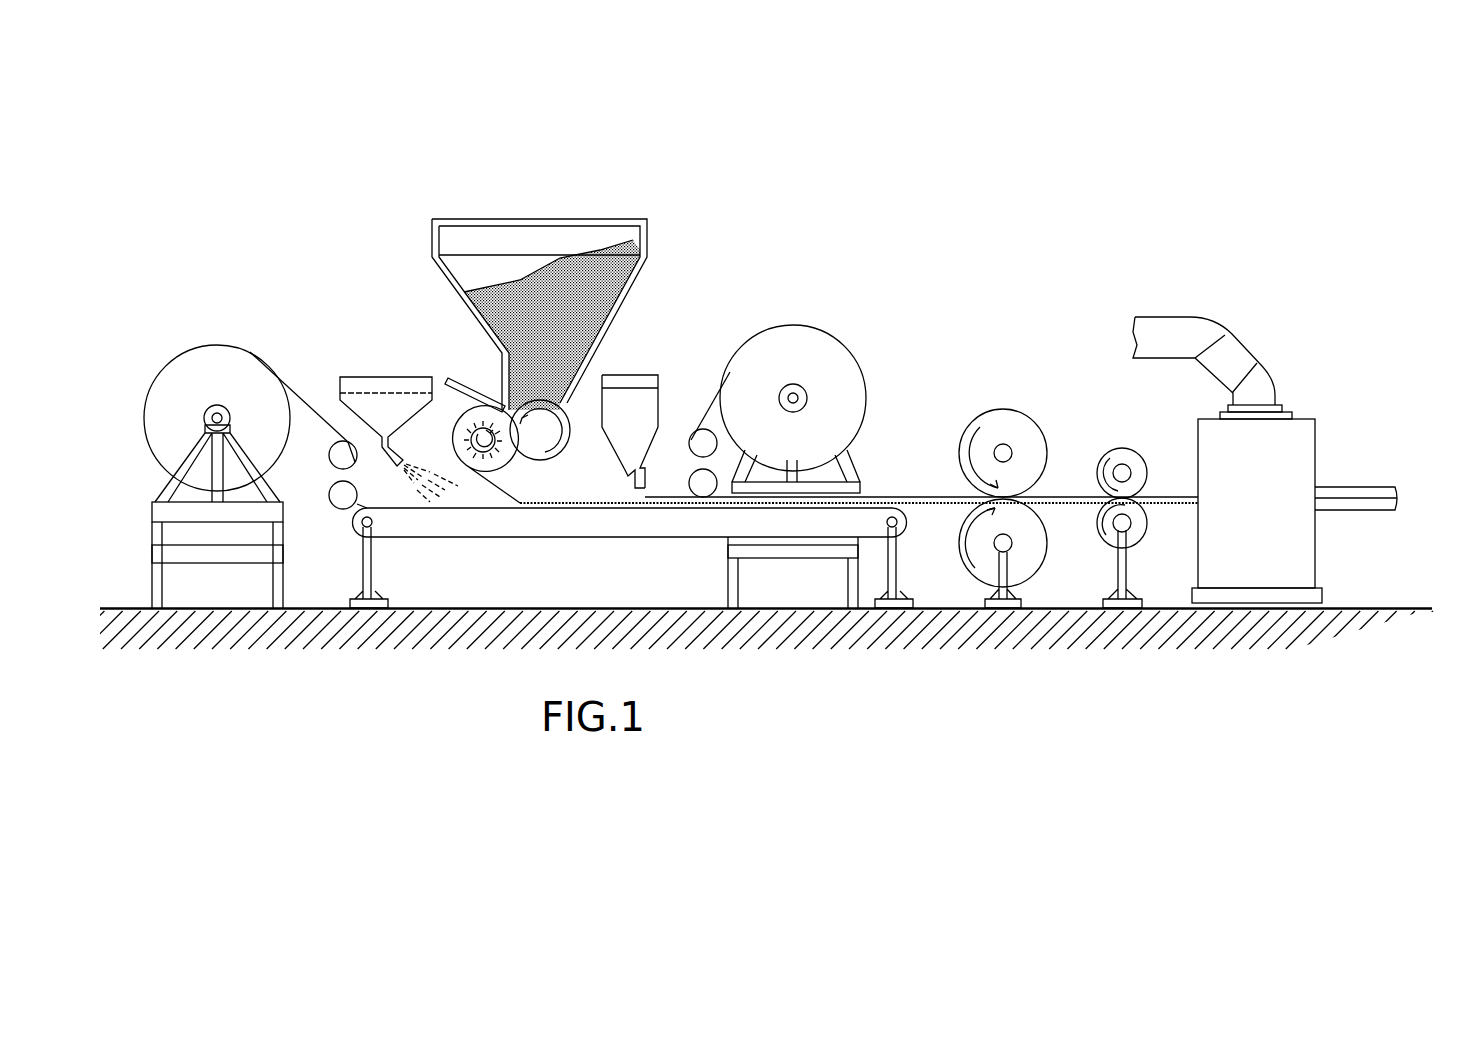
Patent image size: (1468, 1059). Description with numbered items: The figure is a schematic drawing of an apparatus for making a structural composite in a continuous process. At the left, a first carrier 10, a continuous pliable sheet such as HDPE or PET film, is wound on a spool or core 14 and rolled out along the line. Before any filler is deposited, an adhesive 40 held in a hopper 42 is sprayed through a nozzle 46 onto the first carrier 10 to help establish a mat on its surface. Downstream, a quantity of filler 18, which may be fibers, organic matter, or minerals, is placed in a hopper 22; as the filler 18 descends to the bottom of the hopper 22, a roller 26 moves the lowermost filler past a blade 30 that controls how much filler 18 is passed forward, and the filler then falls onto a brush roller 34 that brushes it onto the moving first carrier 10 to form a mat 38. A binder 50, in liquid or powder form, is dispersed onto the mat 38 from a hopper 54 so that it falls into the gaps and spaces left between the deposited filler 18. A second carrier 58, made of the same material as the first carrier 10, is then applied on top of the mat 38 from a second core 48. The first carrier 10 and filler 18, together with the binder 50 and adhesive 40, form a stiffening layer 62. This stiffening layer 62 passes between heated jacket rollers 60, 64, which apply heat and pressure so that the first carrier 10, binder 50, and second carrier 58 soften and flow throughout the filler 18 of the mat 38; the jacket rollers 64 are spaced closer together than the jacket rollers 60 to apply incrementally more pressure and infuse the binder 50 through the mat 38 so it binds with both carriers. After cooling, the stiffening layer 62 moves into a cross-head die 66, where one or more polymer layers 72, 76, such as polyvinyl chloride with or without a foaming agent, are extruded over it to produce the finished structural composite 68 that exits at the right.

The first carrier 10 is at (303, 395).
The spool or core 14 is at (262, 432).
The filler 18 is at (552, 325).
The hopper 22 is at (539, 299).
The roller 26 is at (545, 432).
The blade 30 is at (478, 392).
The brush roller 34 is at (490, 444).
The mat 38 is at (570, 498).
The adhesive 40 is at (373, 402).
The hopper 42 is at (383, 401).
The nozzle 46 is at (398, 464).
The second core 48 is at (817, 363).
The binder 50 is at (632, 409).
The hopper 54 is at (634, 412).
The second carrier 58 is at (695, 425).
The heated jacket rollers 60 is at (962, 548).
The stiffening layer 62 is at (940, 492).
The heated jacket rollers 64 is at (1098, 525).
The cross-head die 66 is at (1227, 460).
The structural composite 68 is at (1338, 484).
The polymer layer 72 is at (1359, 485).
The polymer layer 76 is at (1345, 512).